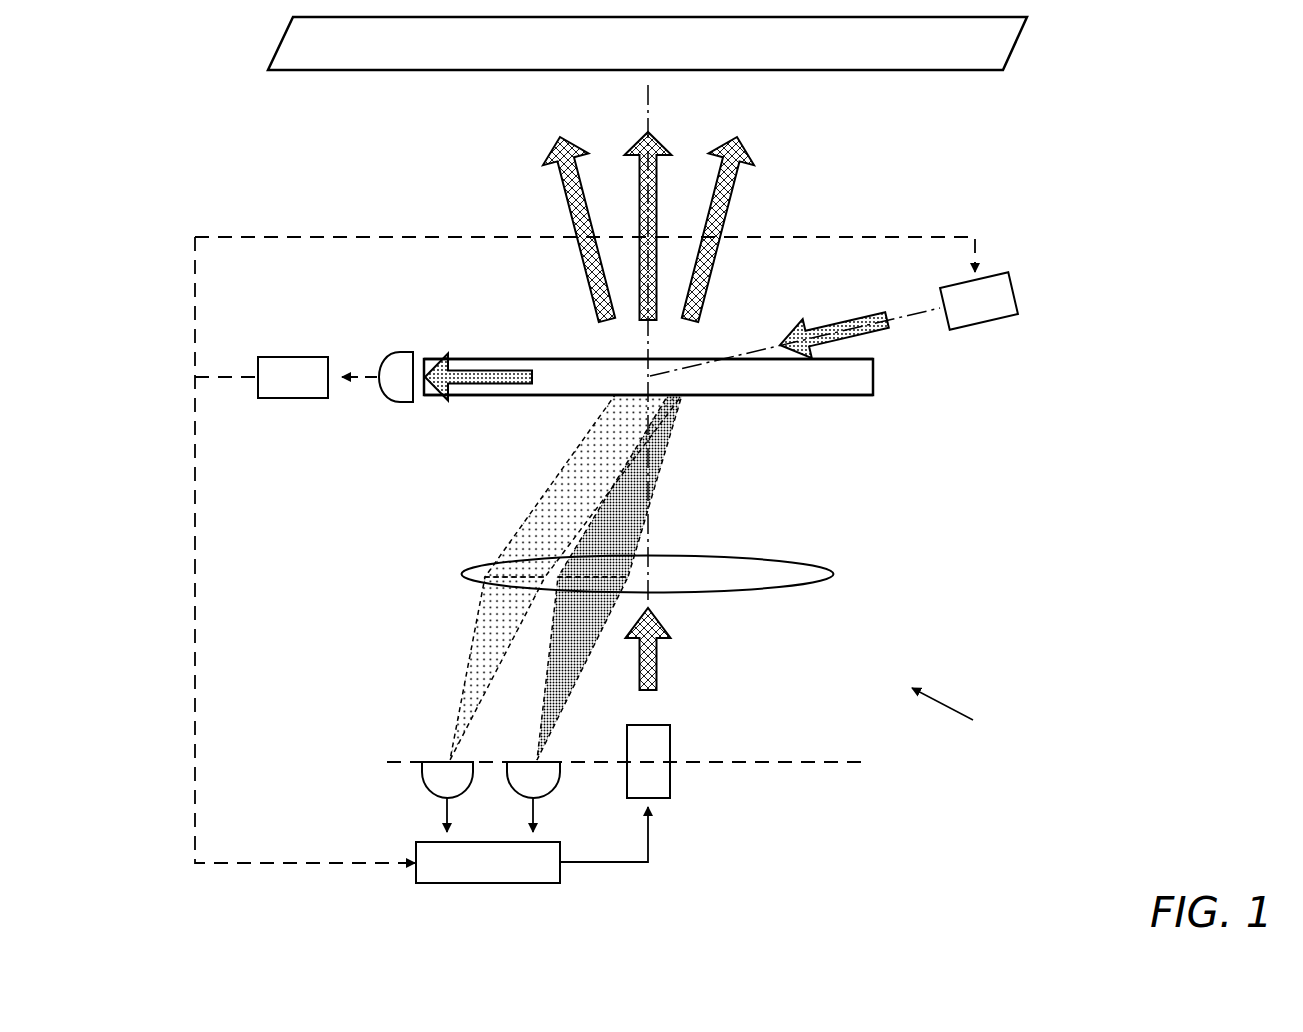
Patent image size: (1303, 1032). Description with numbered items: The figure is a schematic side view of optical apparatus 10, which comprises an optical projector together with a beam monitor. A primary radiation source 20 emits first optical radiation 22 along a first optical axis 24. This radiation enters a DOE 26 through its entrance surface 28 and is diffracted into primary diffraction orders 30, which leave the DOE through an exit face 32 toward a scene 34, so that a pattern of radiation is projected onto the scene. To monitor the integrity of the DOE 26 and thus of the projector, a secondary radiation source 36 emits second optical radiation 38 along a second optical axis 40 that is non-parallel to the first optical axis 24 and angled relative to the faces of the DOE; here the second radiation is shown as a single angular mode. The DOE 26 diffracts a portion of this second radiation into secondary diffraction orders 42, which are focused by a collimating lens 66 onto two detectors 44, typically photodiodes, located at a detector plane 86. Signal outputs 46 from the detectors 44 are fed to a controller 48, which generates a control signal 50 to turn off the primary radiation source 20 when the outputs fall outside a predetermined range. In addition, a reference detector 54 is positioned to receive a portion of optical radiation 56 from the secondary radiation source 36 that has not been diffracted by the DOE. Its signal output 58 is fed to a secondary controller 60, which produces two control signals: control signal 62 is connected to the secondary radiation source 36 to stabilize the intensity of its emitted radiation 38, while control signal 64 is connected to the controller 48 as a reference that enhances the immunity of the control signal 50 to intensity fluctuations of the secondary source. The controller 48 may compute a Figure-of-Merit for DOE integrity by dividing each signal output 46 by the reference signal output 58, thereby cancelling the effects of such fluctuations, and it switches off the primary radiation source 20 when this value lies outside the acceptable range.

The optical apparatus 10 is at (954, 711).
The primary radiation source 20 is at (671, 730).
The optical radiation 22 is at (658, 661).
The first optical axis 24 is at (652, 522).
The DOE 26 is at (851, 383).
The entrance surface 28 is at (774, 397).
The primary diffraction orders 30 is at (640, 204).
The exit face 32 is at (539, 358).
The scene 34 is at (987, 106).
The secondary radiation source 36 is at (988, 323).
The second optical radiation 38 is at (814, 333).
The second optical axis 40 is at (906, 318).
The secondary diffraction orders 42 is at (565, 480).
The detectors 44 is at (422, 785).
The signal outputs 46 is at (446, 818).
The controller 48 is at (490, 877).
The control signal 50 is at (650, 840).
The reference detector 54 is at (400, 404).
The optical radiation 56 is at (478, 385).
The signal output 58 is at (363, 376).
The secondary controller 60 is at (298, 400).
The control signal 62 is at (195, 273).
The control signal 64 is at (195, 626).
The collimating lens 66 is at (834, 573).
The detector plane 86 is at (818, 761).